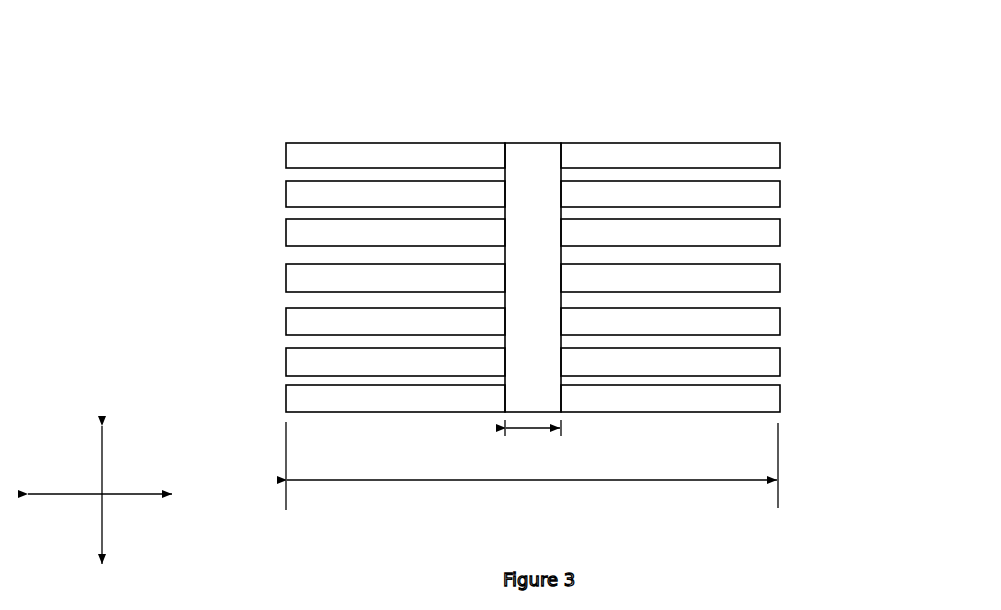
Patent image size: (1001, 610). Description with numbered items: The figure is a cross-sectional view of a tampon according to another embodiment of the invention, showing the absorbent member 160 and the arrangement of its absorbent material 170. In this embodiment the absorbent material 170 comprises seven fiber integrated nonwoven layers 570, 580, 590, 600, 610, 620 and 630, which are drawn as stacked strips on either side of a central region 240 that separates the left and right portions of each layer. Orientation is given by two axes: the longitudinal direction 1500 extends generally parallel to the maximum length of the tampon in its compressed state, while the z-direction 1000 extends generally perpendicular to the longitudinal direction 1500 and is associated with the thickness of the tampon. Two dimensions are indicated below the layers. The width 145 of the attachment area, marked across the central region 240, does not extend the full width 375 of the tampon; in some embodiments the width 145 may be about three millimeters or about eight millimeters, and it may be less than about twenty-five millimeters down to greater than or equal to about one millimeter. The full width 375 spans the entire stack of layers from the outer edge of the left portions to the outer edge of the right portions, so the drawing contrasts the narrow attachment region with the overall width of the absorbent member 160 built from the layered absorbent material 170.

The absorbent member 160 is at (554, 229).
The absorbent material 170 is at (285, 208).
The gap channel 240 is at (529, 153).
The fiber integrated nonwoven layer 570 is at (757, 157).
The fiber integrated nonwoven layer 580 is at (763, 200).
The fiber integrated nonwoven layer 590 is at (770, 233).
The fiber integrated nonwoven layer 600 is at (765, 277).
The fiber integrated nonwoven layer 610 is at (760, 322).
The fiber integrated nonwoven layer 620 is at (758, 358).
The fiber integrated nonwoven layer 630 is at (748, 400).
The width of the attachment area 145 is at (530, 432).
The width of the tampon 375 is at (530, 482).
The z-direction 1000 is at (104, 465).
The longitudinal direction 1500 is at (127, 497).